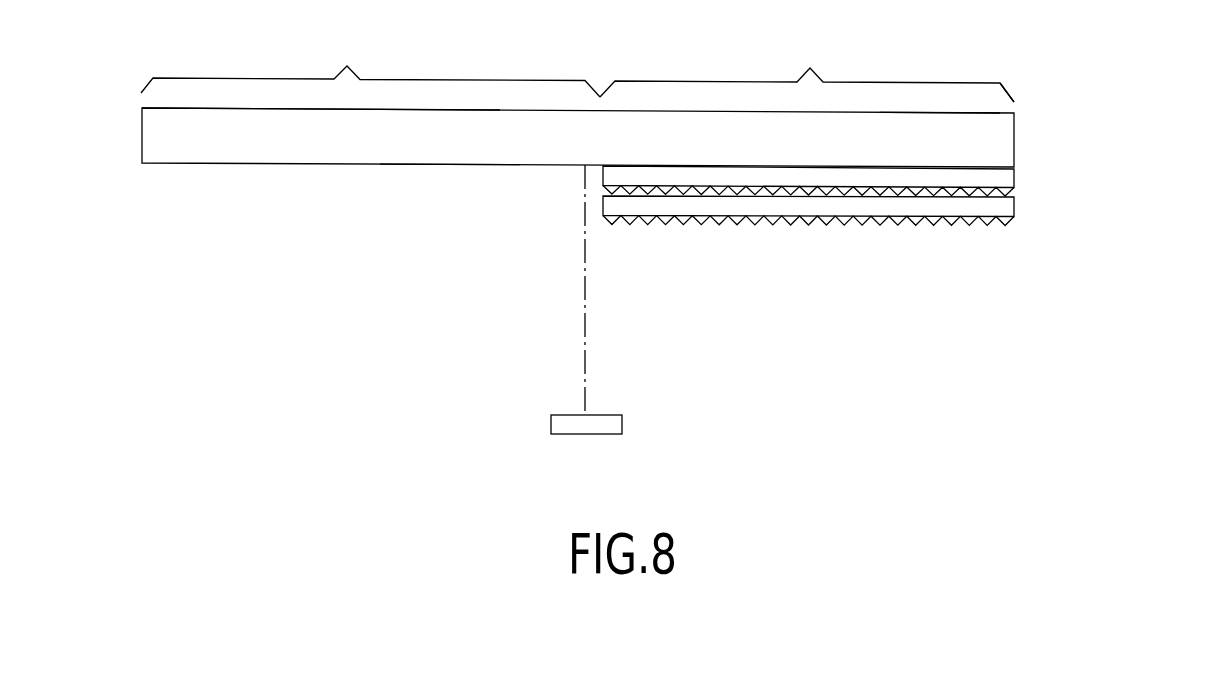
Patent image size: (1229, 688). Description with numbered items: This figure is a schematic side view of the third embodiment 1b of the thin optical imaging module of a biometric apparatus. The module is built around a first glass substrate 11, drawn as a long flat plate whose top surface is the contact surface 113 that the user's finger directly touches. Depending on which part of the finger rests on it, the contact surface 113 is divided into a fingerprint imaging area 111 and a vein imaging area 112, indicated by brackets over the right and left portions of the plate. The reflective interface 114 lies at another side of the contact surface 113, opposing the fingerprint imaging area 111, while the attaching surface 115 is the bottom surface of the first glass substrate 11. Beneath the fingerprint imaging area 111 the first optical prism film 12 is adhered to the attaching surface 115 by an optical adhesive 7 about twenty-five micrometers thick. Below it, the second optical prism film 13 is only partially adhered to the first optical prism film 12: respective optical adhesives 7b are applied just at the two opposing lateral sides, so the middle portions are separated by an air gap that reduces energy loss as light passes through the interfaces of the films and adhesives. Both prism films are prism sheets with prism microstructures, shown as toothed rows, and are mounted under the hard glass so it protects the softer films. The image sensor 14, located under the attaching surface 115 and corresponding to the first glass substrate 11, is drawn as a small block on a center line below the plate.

The thin optical imaging module of a biometric apparatus 1b is at (1132, 88).
The first glass substrate 11 is at (1015, 135).
The fingerprint imaging area 111 is at (807, 69).
The vein imaging area 112 is at (370, 64).
The contact surface 113 is at (1014, 102).
The reflective interface 114 is at (959, 120).
The attaching surface 115 is at (450, 164).
The optical adhesive 7 is at (1015, 167).
The optical adhesive 7b is at (1015, 198).
The first optical prism film 12 is at (1015, 177).
The second optical prism film 13 is at (1015, 213).
The image sensor 14 is at (622, 425).